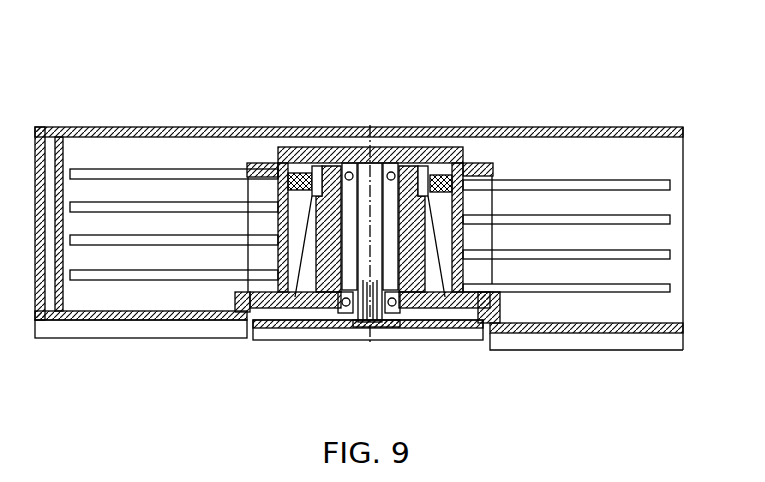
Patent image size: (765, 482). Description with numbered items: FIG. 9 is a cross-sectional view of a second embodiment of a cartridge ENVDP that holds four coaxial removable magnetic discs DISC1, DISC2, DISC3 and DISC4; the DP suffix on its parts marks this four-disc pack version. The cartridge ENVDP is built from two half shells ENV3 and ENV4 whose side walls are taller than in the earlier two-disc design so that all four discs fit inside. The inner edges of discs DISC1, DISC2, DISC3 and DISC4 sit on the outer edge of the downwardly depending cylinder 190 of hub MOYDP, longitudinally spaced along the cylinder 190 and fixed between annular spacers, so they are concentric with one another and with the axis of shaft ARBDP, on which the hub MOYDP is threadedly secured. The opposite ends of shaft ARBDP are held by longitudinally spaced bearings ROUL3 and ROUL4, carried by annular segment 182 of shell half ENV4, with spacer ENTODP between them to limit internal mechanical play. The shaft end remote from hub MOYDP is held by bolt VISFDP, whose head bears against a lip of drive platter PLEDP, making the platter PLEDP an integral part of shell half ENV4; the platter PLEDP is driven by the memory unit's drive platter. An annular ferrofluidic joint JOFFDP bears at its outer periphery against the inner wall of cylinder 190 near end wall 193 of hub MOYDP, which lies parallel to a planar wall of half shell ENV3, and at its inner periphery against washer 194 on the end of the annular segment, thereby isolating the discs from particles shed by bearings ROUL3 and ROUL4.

The annular segment 182 is at (252, 323).
The downwardly depending cylinder 190 is at (467, 237).
The end wall 193 is at (349, 165).
The washer 194 is at (338, 160).
The cartridge ENVDP is at (36, 128).
The half shell ENV3 is at (108, 127).
The half shell ENV4 is at (73, 320).
The cartridge (four-disc embodiment) DP is at (577, 128).
The magnetic disc DISC1 is at (96, 149).
The magnetic disc DISC2 is at (96, 184).
The magnetic disc DISC3 is at (87, 245).
The magnetic disc DISC4 is at (87, 280).
The spacer ENTODP is at (472, 138).
The hub MOYDP is at (262, 148).
The annular ferrofluidic joint JOFFDP is at (314, 168).
The shaft ARBDP is at (370, 160).
The bearing ROUL3 is at (385, 166).
The bearing ROUL4 is at (395, 333).
The bolt VISFDP is at (362, 332).
The drive platter PLEDP is at (325, 340).